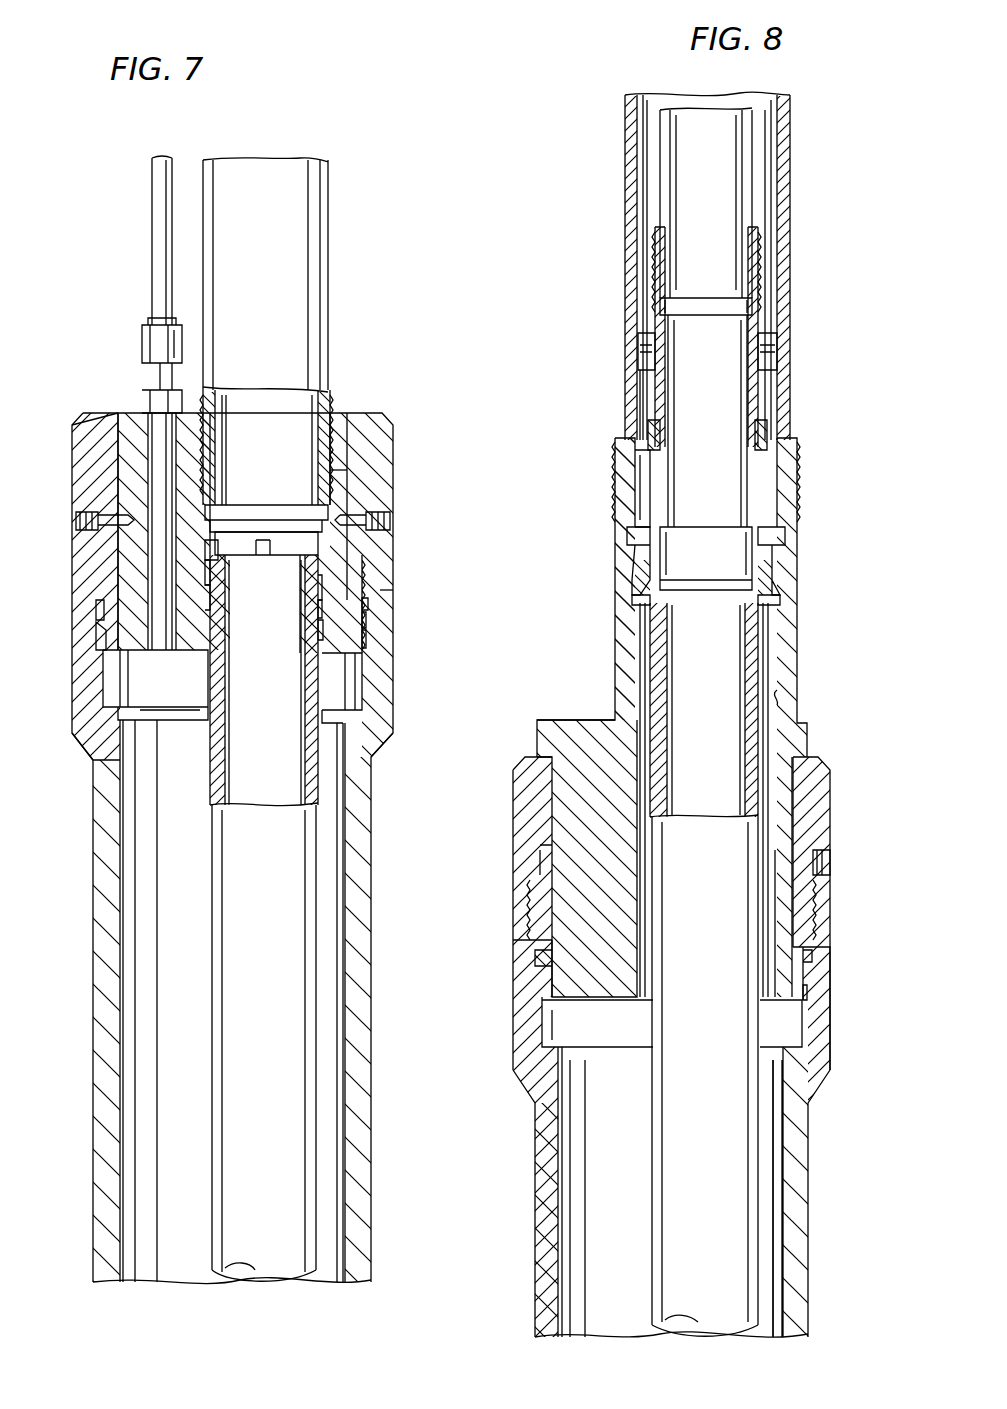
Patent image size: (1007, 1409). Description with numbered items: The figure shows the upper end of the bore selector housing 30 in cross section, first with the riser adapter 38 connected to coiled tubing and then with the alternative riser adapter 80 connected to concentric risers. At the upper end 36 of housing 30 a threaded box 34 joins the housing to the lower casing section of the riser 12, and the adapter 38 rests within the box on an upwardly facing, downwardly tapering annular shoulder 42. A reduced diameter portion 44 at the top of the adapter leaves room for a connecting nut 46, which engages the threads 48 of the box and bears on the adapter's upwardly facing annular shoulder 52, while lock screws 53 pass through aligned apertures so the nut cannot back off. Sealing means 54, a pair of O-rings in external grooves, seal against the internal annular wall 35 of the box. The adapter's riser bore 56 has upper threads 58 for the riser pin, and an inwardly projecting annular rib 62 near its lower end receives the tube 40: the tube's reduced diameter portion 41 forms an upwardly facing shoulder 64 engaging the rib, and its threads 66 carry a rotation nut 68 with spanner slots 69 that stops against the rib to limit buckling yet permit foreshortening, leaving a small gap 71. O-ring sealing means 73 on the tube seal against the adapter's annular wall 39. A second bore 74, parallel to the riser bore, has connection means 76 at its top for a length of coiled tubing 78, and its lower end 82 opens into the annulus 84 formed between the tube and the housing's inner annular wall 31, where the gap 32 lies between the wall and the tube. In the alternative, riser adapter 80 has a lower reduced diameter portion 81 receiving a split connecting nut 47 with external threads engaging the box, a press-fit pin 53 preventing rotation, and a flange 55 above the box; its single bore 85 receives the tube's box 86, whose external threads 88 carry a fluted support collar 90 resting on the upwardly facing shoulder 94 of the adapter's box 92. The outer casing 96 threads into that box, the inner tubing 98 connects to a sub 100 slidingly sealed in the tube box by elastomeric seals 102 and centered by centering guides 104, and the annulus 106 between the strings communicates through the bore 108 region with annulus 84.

In FIG. 7, the riser 12 is at (332, 200).
In FIG. 8, the riser 12 is at (801, 165).
In FIG. 7, the housing 30 is at (381, 1134).
In FIG. 8, the housing 30 is at (535, 1226).
In FIG. 7, the inner annular wall 31 is at (108, 958).
In FIG. 7, the annular gap 32 is at (340, 1003).
In FIG. 7, the threaded box 34 is at (380, 592).
In FIG. 8, the threaded box 34 is at (512, 1027).
In FIG. 7, the internal annular wall 35 is at (100, 660).
In FIG. 7, the upper end 36 is at (372, 792).
In FIG. 7, the adapter 38 is at (335, 506).
In FIG. 7, the annular wall 39 is at (308, 660).
In FIG. 7, the tube 40 is at (331, 940).
In FIG. 8, the tube 40 is at (760, 1172).
In FIG. 7, the reduced diameter portion 41 is at (208, 600).
In FIG. 7, the annular shoulder 42 is at (356, 674).
In FIG. 7, the reduced diameter portion 44 is at (336, 470).
In FIG. 7, the connecting nut 46 is at (82, 442).
In FIG. 8, the split connecting nut 47 is at (831, 804).
In FIG. 7, the threads 48 is at (366, 556).
In FIG. 8, the threads 48 is at (812, 924).
In FIG. 7, the annular shoulder 52 is at (366, 604).
In FIG. 8, the annular shoulder 52 is at (808, 936).
In FIG. 7, the lock screws 53 is at (78, 518).
In FIG. 8, the lock screws 53 is at (536, 962).
In FIG. 7, the sealing means 54 is at (364, 636).
In FIG. 8, the sealing means 54 is at (806, 992).
In FIG. 8, the flange 55 is at (540, 742).
In FIG. 7, the riser bore 56 is at (312, 530).
In FIG. 7, the upper threads 58 is at (332, 448).
In FIG. 7, the annular rib 62 is at (366, 616).
In FIG. 7, the annular shoulder 64 is at (310, 590).
In FIG. 7, the threads 66 is at (206, 576).
In FIG. 7, the rotation nut 68 is at (212, 548).
In FIG. 7, the slots 69 is at (262, 530).
In FIG. 7, the gap 71 is at (393, 596).
In FIG. 7, the sealing means 73 is at (206, 640).
In FIG. 7, the second bore 74 is at (156, 482).
In FIG. 7, the connection means 76 is at (148, 412).
In FIG. 7, the coiled tubing 78 is at (150, 200).
In FIG. 8, the riser adapter 80 is at (618, 666).
In FIG. 8, the reduced diameter portion 81 is at (794, 840).
In FIG. 7, the lower end 82 is at (160, 675).
In FIG. 7, the annulus 84 is at (130, 855).
In FIG. 8, the annulus 84 is at (775, 1286).
In FIG. 8, the single bore 85 is at (778, 693).
In FIG. 8, the box 86 is at (650, 483).
In FIG. 8, the external threads 88 is at (632, 540).
In FIG. 8, the support collar 90 is at (775, 576).
In FIG. 8, the box 92 is at (798, 490).
In FIG. 8, the shoulder 94 is at (776, 601).
In FIG. 8, the casing 96 is at (630, 393).
In FIG. 8, the tubing 98 is at (660, 157).
In FIG. 8, the sub 100 is at (660, 290).
In FIG. 8, the elastomeric seals 102 is at (765, 446).
In FIG. 8, the centering guides 104 is at (770, 345).
In FIG. 8, the annulus 106 is at (766, 210).
In FIG. 8, the bore 108 is at (776, 901).